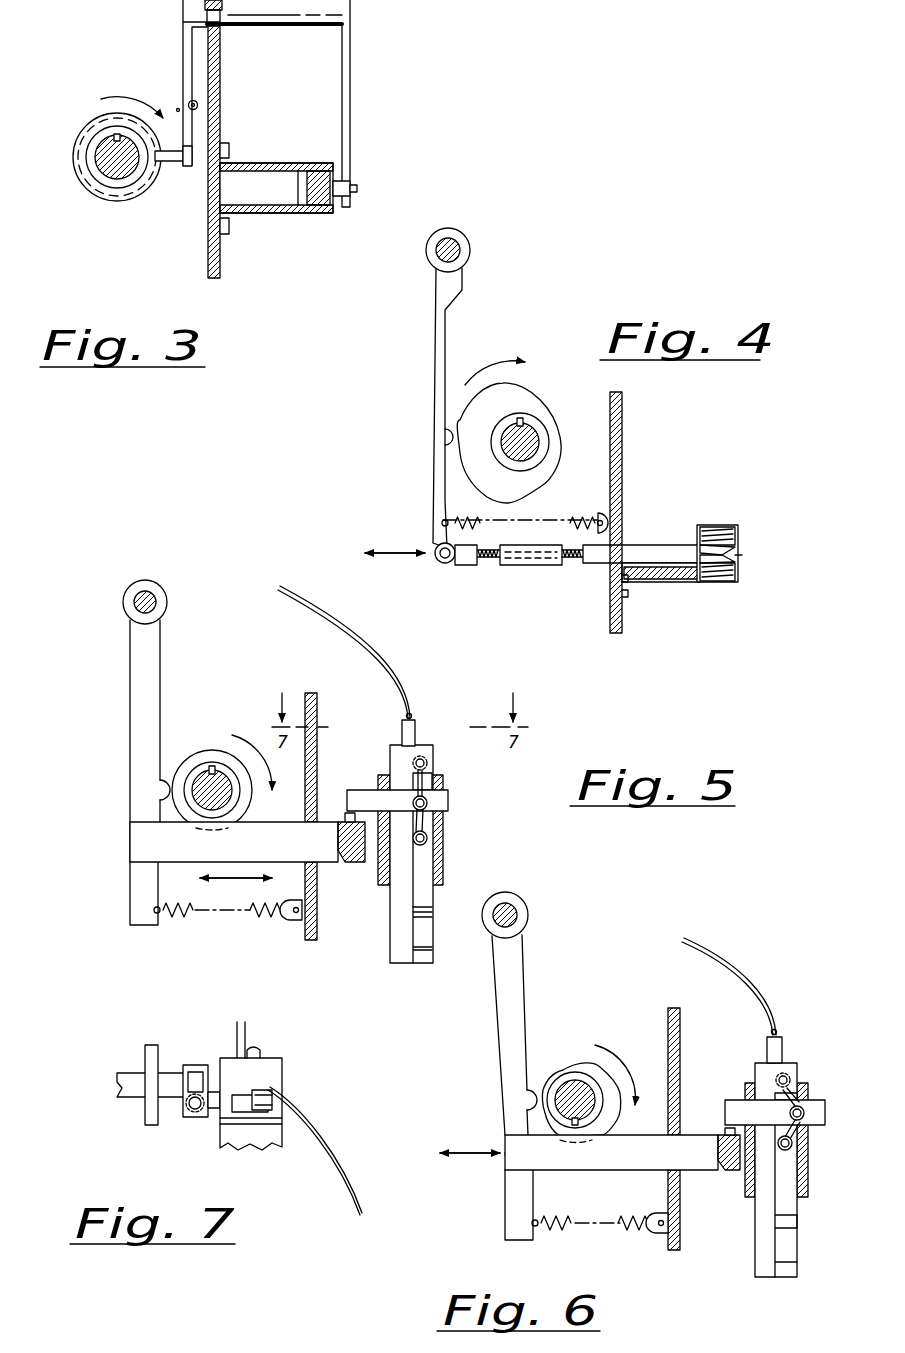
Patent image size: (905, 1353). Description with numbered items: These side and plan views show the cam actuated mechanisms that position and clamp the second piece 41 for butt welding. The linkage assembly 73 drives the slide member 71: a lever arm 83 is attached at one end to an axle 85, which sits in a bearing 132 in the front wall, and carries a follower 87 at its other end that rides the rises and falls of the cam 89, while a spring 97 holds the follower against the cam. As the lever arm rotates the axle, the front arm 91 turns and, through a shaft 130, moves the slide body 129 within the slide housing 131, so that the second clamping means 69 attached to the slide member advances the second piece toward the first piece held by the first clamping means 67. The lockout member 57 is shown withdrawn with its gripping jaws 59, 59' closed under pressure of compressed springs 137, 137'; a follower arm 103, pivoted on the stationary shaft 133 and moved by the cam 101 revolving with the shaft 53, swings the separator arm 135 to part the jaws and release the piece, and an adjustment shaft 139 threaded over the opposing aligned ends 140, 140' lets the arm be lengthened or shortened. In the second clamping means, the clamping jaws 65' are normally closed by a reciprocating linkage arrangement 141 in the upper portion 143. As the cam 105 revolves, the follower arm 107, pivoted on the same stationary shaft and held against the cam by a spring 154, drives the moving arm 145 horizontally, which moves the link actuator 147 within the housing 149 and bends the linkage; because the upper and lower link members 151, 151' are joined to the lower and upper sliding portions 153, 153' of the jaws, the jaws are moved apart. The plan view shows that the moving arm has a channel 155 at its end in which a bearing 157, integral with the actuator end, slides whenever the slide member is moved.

In FIG. 4, the second piece 41 is at (742, 561).
In FIG. 5, the second piece 41 is at (433, 910).
In FIG. 4, the shaft 53 is at (545, 460).
In FIG. 4, the lockout member 57 is at (714, 478).
In FIG. 4, the gripping jaw 59 is at (740, 540).
In FIG. 4, the gripping jaw 59' is at (740, 579).
In FIG. 5, the clamping jaw 65' is at (460, 957).
In FIG. 6, the clamping jaw 65' is at (834, 1214).
In FIG. 7, the first clamping means 67 is at (290, 1148).
In FIG. 5, the second clamping means 69 is at (462, 810).
In FIG. 6, the second clamping means 69 is at (796, 1015).
In FIG. 7, the second clamping means 69 is at (308, 1106).
In FIG. 3, the slide member 71 is at (366, 170).
In FIG. 7, the slide member 71 is at (270, 1032).
In FIG. 3, the linkage assembly 73 is at (372, 62).
In FIG. 3, the lever arm 83 is at (183, 34).
In FIG. 3, the axle 85 is at (222, 12).
In FIG. 3, the follower 87 is at (176, 166).
In FIG. 3, the cam 89 is at (100, 112).
In FIG. 3, the front arm 91 is at (342, 68).
In FIG. 3, the spring 97 is at (190, 102).
In FIG. 4, the cam 101 is at (520, 405).
In FIG. 4, the follower arm 103 is at (433, 357).
In FIG. 5, the cam 105 is at (195, 752).
In FIG. 6, the cam 105 is at (565, 1072).
In FIG. 5, the follower arm 107 is at (130, 668).
In FIG. 6, the follower arm 107 is at (505, 1050).
In FIG. 3, the slide body 129 is at (316, 212).
In FIG. 3, the shaft 130 is at (357, 189).
In FIG. 3, the slide housing 131 is at (300, 164).
In FIG. 3, the bearing 132 is at (215, 45).
In FIG. 4, the stationary shaft 133 is at (468, 255).
In FIG. 5, the stationary shaft 133 is at (130, 590).
In FIG. 6, the stationary shaft 133 is at (505, 915).
In FIG. 4, the separator arm 135 is at (662, 545).
In FIG. 4, the compressed spring 137 is at (718, 517).
In FIG. 4, the compressed spring 137' is at (728, 594).
In FIG. 4, the adjustment shaft 139 is at (528, 568).
In FIG. 4, the aligned end 140 is at (482, 582).
In FIG. 4, the aligned end 140' is at (582, 585).
In FIG. 5, the reciprocating linkage arrangement 141 is at (430, 798).
In FIG. 6, the reciprocating linkage arrangement 141 is at (808, 1094).
In FIG. 5, the upper portion 143 is at (432, 800).
In FIG. 6, the upper portion 143 is at (855, 1105).
In FIG. 5, the moving arm 145 is at (272, 855).
In FIG. 6, the moving arm 145 is at (643, 1168).
In FIG. 7, the moving arm 145 is at (128, 1073).
In FIG. 5, the link actuator 147 is at (356, 790).
In FIG. 6, the link actuator 147 is at (725, 1110).
In FIG. 7, the link actuator 147 is at (185, 1103).
In FIG. 5, the housing 149 is at (380, 768).
In FIG. 6, the housing 149 is at (745, 1085).
In FIG. 5, the upper link member 151 is at (441, 752).
In FIG. 6, the upper link member 151 is at (806, 1066).
In FIG. 7, the upper link member 151 is at (282, 1086).
In FIG. 5, the lower link member 151' is at (455, 833).
In FIG. 6, the lower link member 151' is at (822, 1144).
In FIG. 7, the lower link member 151' is at (266, 1150).
In FIG. 5, the lower sliding portion 153 is at (416, 874).
In FIG. 6, the lower sliding portion 153 is at (805, 1170).
In FIG. 5, the upper sliding portion 153' is at (442, 830).
In FIG. 6, the upper sliding portion 153' is at (803, 1140).
In FIG. 5, the spring 154 is at (198, 915).
In FIG. 6, the spring 154 is at (575, 1220).
In FIG. 7, the channel 155 is at (194, 1073).
In FIG. 5, the bearing 157 is at (363, 850).
In FIG. 6, the bearing 157 is at (729, 1149).
In FIG. 7, the bearing 157 is at (192, 1120).